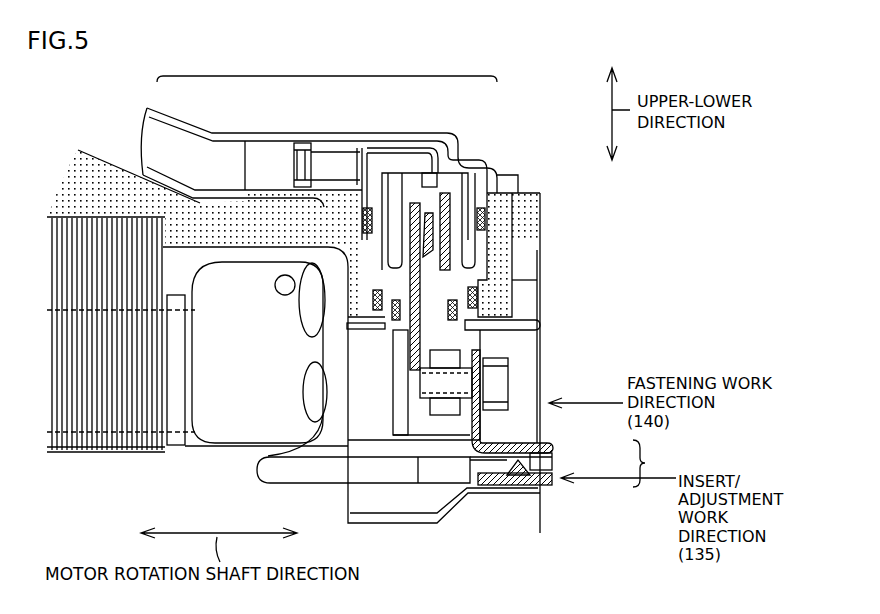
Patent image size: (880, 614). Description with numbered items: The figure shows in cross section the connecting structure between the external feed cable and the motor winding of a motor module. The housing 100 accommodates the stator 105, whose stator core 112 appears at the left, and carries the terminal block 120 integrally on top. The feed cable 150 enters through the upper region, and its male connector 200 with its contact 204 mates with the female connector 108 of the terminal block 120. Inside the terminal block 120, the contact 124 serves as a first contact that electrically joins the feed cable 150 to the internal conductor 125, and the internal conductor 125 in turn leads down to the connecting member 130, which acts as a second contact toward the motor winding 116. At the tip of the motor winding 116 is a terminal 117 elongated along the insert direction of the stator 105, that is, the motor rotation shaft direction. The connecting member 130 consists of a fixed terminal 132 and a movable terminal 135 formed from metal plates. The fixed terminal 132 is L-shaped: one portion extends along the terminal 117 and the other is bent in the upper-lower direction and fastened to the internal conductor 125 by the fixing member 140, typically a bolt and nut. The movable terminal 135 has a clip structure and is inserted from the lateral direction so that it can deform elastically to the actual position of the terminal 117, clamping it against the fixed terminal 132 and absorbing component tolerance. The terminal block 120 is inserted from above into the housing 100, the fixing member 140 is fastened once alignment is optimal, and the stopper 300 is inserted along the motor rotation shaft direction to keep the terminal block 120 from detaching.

The housing 100 is at (111, 190).
The stator 105 is at (222, 455).
The female connector 108 is at (460, 240).
The stator core 112 is at (78, 453).
The motor winding 116 is at (303, 473).
The terminal 117 is at (553, 458).
The terminal block 120 is at (470, 326).
The contact 124 is at (425, 217).
The internal conductor 125 is at (420, 277).
The connecting member 130 is at (656, 463).
The fixed terminal 132 is at (553, 447).
The movable terminal 135 is at (557, 484).
The fixing member 140 is at (497, 385).
The feed cable 150 is at (340, 128).
The male connector 200 is at (440, 133).
The contact 204 is at (400, 143).
The stopper 300 is at (491, 493).